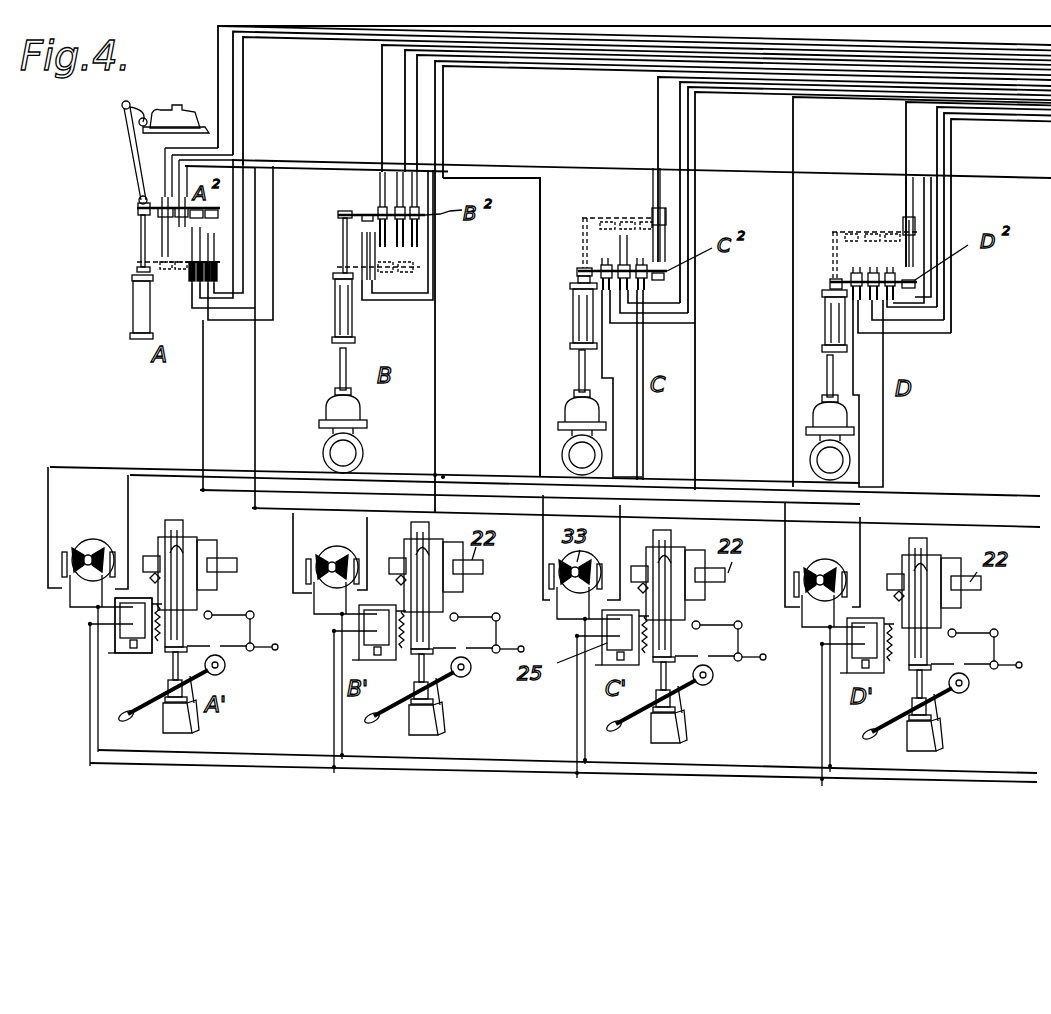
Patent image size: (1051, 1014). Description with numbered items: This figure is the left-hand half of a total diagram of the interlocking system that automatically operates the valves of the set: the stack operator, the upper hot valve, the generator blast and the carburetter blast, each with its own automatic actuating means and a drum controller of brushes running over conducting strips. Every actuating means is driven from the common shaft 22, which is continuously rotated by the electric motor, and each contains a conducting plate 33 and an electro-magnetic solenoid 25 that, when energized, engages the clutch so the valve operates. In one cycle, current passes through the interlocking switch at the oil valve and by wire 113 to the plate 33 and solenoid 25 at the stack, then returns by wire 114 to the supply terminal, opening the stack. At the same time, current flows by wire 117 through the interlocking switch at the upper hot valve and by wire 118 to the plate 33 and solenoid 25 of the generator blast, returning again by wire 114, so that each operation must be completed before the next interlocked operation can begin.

The wire 117 is at (422, 125).
The wire 118 is at (520, 177).
The wire 113 is at (928, 493).
The wire 114 is at (262, 770).
The conducting plate 33 is at (90, 542).
The shaft 22 is at (228, 560).
The electro-magnetic solenoid 25 is at (127, 633).